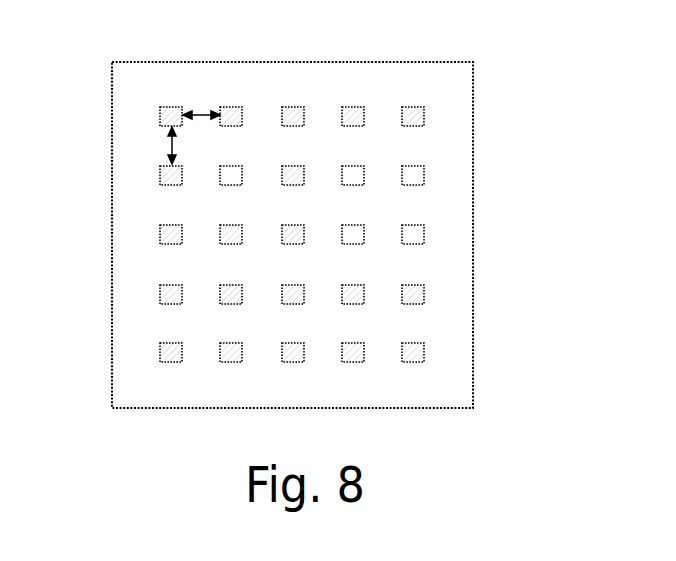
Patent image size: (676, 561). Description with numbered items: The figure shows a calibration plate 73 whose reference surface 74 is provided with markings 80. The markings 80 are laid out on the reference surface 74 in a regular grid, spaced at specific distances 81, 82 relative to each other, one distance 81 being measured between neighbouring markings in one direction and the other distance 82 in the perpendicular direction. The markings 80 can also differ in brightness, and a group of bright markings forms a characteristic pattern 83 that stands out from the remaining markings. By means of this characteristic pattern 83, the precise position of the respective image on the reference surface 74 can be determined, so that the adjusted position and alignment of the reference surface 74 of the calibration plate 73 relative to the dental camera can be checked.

The calibration plate 73 is at (473, 122).
The reference surface 74 is at (456, 93).
The markings 80 is at (282, 113).
The distance 81 is at (201, 118).
The distance 82 is at (171, 147).
The characteristic pattern 83 is at (413, 166).